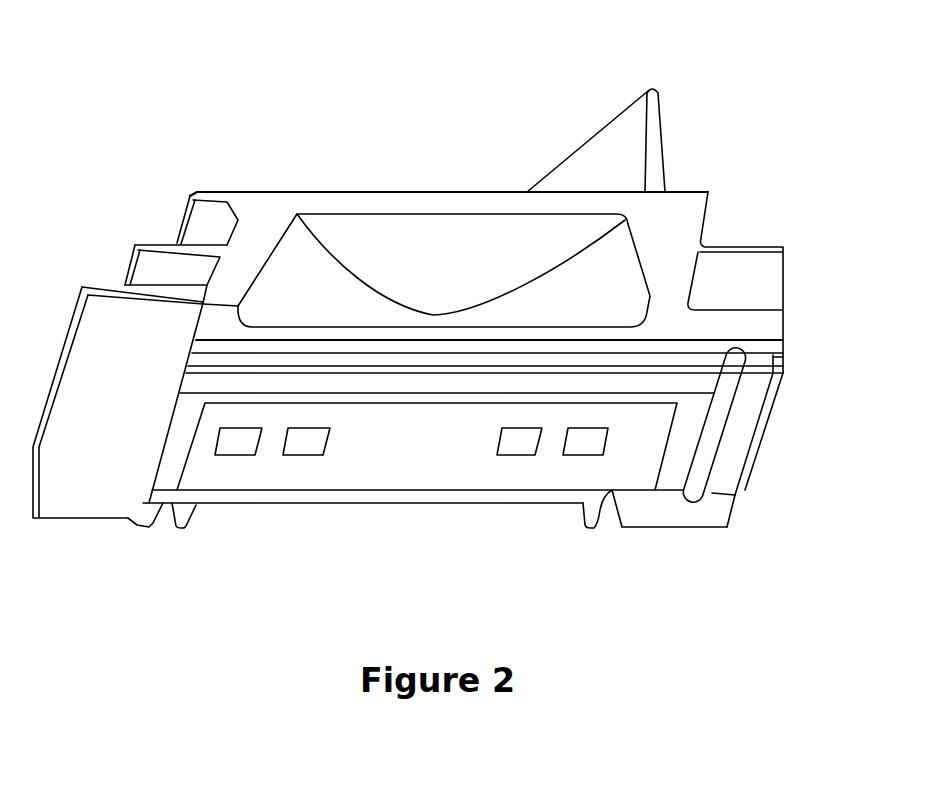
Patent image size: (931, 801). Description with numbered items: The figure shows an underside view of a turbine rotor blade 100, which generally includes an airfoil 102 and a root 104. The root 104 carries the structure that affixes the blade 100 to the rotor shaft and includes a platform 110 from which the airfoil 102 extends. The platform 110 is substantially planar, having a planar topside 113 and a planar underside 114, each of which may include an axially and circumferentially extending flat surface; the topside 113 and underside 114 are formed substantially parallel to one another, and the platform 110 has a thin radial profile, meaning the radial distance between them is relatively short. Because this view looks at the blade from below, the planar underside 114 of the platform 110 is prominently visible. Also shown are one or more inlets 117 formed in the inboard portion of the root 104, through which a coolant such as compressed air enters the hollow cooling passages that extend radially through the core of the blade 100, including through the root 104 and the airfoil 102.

The turbine rotor blade 100 is at (178, 73).
The airfoil 102 is at (617, 140).
The root 104 is at (787, 393).
The platform 110 is at (213, 183).
The planar topside 113 is at (343, 191).
The planar underside 114 is at (473, 286).
The inlets 117 is at (236, 447).